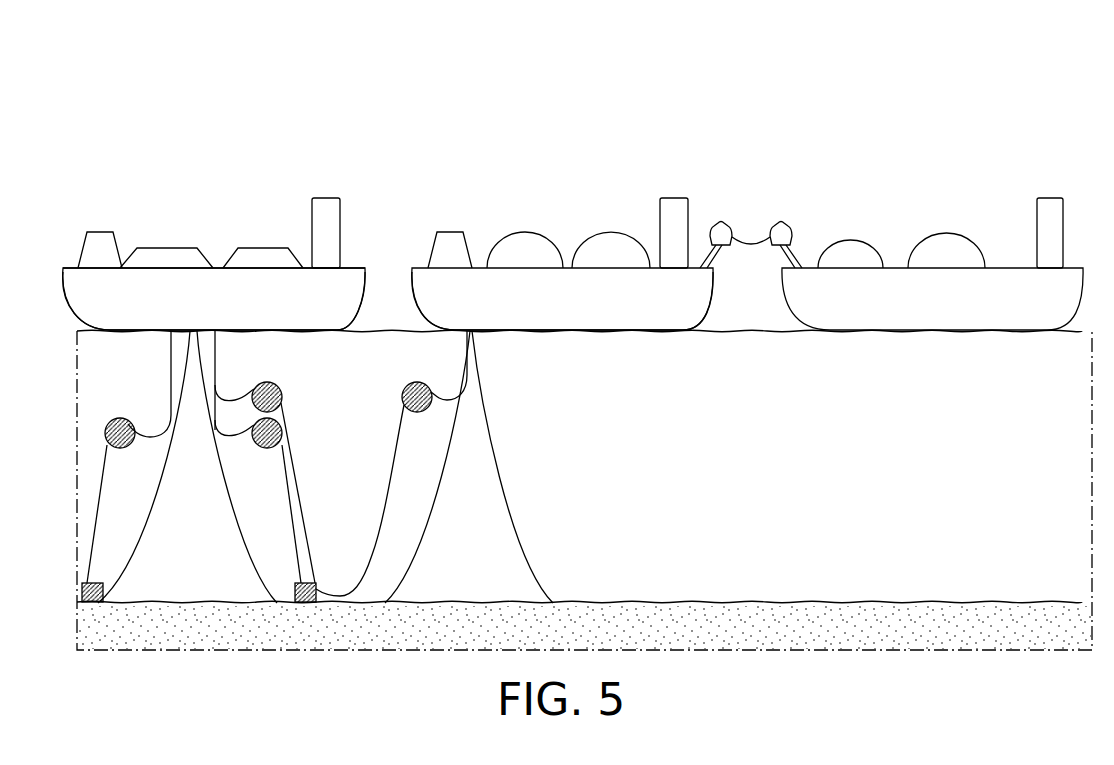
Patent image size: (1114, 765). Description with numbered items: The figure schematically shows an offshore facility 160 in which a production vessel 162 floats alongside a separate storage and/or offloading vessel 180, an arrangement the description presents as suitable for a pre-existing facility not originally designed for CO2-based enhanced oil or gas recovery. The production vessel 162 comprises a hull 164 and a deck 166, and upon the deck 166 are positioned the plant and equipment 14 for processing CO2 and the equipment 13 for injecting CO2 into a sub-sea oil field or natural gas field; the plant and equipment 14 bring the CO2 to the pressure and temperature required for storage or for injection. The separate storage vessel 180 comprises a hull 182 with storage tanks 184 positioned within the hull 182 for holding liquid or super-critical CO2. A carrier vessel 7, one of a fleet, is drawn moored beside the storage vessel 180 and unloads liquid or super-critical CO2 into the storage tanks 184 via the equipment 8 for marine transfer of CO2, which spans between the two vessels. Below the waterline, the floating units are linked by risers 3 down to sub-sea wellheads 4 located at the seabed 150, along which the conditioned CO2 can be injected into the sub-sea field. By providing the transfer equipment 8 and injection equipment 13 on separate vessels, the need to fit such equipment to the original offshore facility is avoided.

The offshore facility 160 is at (238, 83).
The production vessel 162 is at (78, 292).
The hull 164 is at (296, 325).
The deck 166 is at (348, 263).
The equipment for injecting CO2 13 is at (167, 256).
The plant and equipment for processing CO2 14 is at (262, 256).
The hull 182 is at (428, 292).
The storage tanks 184 is at (658, 323).
The storage and/or offloading vessel 180 is at (570, 282).
The equipment for marine transfer of CO2 8 is at (750, 243).
The carrier vessel 7 is at (897, 278).
The risers 3 is at (103, 457).
The sub-sea wellheads 4 is at (101, 603).
The seabed 150 is at (665, 600).